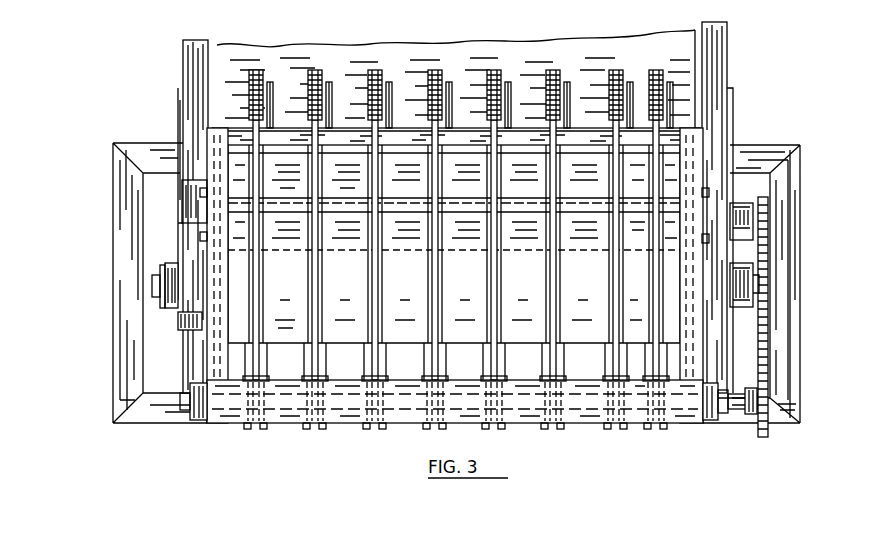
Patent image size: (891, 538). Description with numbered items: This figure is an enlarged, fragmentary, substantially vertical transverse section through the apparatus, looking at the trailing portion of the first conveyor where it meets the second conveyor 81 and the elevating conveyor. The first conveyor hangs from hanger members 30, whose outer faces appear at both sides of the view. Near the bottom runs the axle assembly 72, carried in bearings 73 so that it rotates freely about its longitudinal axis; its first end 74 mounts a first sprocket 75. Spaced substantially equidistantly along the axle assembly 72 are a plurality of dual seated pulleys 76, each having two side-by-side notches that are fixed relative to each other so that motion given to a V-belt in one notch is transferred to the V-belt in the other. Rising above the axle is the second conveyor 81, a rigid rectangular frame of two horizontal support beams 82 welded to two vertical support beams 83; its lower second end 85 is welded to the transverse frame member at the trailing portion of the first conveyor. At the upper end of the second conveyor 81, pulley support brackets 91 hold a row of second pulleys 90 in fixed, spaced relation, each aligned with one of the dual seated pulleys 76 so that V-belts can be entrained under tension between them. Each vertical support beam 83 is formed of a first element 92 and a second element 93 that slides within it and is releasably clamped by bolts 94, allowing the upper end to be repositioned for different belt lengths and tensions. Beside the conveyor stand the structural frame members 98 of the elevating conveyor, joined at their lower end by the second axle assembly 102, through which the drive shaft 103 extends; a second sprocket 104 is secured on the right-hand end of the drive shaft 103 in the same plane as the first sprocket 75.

The hanger member 30 is at (125, 241).
The axle assembly 72 is at (393, 437).
The bearing 73 is at (200, 425).
The first end 74 is at (736, 396).
The first sprocket 75 is at (768, 404).
The dual seated pulley 76 is at (262, 430).
The second conveyor 81 is at (585, 93).
The horizontal support beam 82 is at (680, 130).
The vertical support beam 83 is at (226, 238).
The second end 85 is at (687, 435).
The second pulley 90 is at (373, 80).
The pulley support bracket 91 is at (268, 100).
The first element 92 is at (218, 350).
The second element 93 is at (230, 157).
The bolt 94 is at (200, 238).
The structural frame member 98 is at (193, 67).
The second axle assembly 102 is at (163, 308).
The drive shaft 103 is at (150, 288).
The second sprocket 104 is at (768, 272).